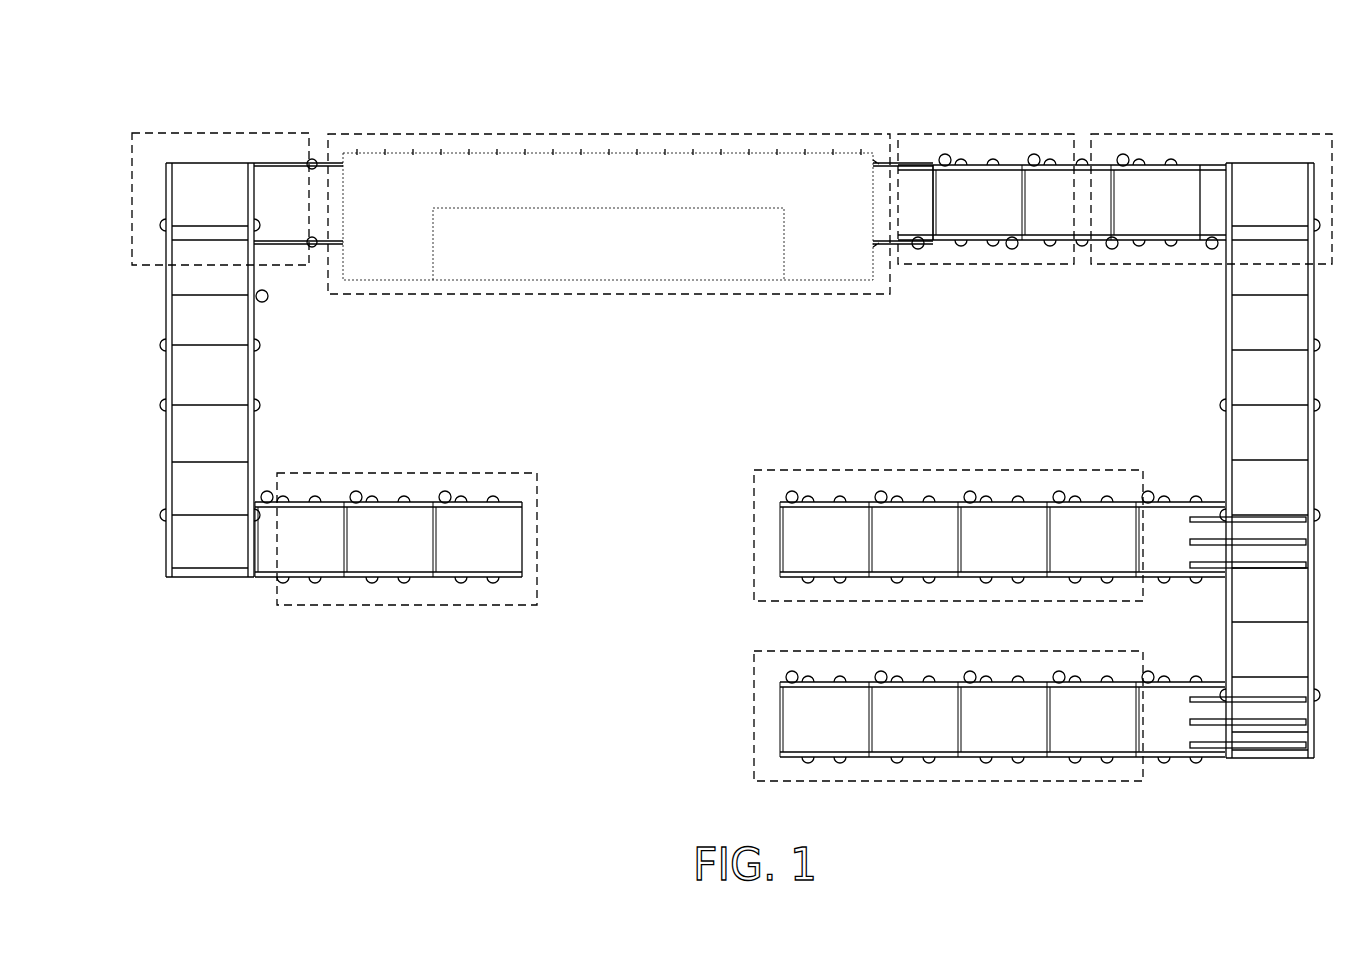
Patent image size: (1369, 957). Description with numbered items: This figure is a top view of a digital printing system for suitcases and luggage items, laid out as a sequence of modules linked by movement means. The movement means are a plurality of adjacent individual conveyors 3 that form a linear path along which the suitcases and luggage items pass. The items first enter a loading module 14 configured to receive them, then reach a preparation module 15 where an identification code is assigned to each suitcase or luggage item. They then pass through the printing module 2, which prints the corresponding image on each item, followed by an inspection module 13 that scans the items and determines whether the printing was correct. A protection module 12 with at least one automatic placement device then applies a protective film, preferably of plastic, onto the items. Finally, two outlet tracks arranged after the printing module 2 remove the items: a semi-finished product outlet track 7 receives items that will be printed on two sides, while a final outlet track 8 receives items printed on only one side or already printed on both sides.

The printing module 2 is at (540, 131).
The individual conveyors 3 is at (167, 424).
The semi-finished product outlet track 7 is at (751, 552).
The final outlet track 8 is at (751, 716).
The protection module 12 is at (1235, 131).
The inspection module 13 is at (990, 131).
The loading module 14 is at (430, 608).
The preparation module 15 is at (216, 131).